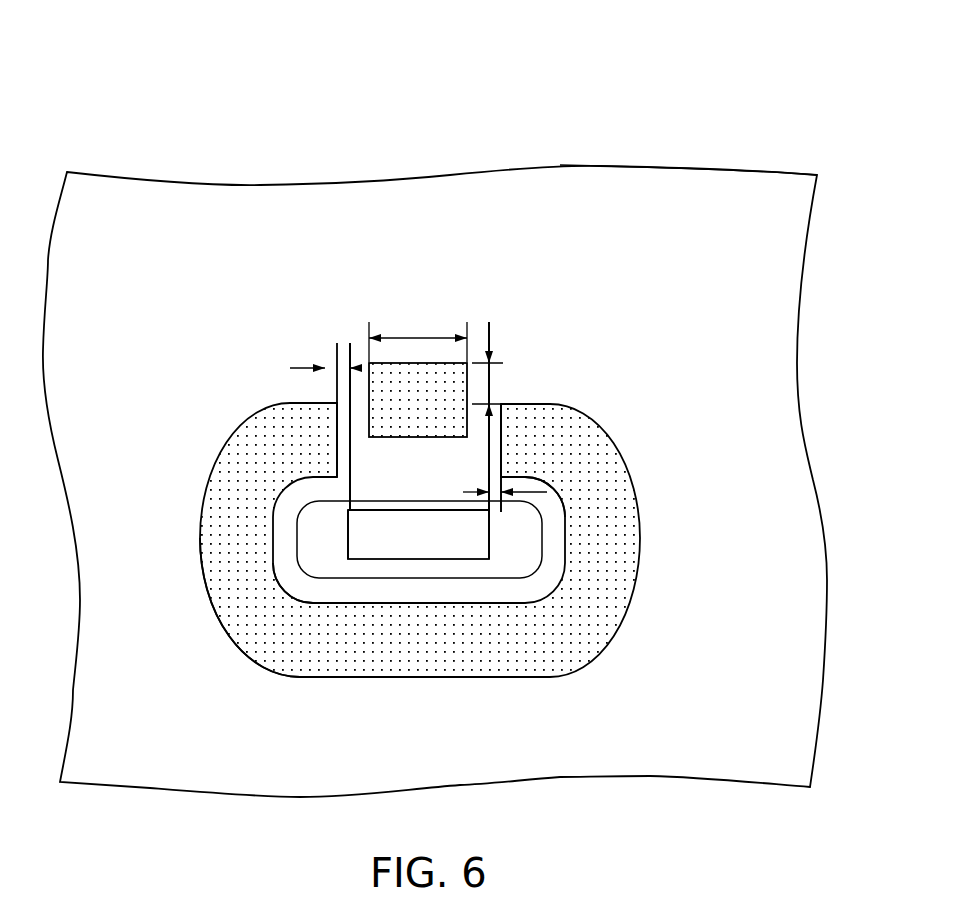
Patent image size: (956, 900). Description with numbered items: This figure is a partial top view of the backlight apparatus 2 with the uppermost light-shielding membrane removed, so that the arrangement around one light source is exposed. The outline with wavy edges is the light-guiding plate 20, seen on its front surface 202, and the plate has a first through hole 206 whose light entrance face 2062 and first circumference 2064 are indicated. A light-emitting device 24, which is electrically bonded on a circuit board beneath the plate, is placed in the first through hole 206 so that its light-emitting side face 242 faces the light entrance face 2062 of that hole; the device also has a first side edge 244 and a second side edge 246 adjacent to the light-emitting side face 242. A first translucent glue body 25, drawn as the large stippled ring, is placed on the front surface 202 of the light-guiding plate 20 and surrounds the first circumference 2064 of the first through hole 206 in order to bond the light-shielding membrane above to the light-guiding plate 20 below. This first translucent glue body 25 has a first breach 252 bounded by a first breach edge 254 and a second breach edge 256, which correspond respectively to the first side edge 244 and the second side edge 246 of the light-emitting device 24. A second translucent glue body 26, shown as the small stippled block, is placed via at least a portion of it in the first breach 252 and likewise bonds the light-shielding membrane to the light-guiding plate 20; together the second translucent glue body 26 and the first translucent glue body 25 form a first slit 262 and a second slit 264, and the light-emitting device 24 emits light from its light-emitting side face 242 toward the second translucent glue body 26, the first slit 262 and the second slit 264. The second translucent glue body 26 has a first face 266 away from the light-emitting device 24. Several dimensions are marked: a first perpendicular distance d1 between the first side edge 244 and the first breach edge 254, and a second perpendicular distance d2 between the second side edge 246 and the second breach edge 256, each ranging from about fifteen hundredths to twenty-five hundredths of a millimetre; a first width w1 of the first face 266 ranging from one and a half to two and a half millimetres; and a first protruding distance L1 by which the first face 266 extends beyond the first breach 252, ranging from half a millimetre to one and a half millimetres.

The backlight apparatus 2 is at (444, 68).
The light-guiding plate 20 is at (532, 197).
The front surface 202 is at (765, 222).
The first through hole 206 is at (518, 560).
The light entrance face 2062 is at (420, 500).
The first circumference 2064 is at (318, 590).
The light-emitting device 24 is at (415, 537).
The light-emitting side face 242 is at (443, 513).
The first side edge 244 is at (347, 530).
The second side edge 246 is at (489, 533).
The first translucent glue body 25 is at (256, 640).
The first breach 252 is at (417, 467).
The first breach edge 254 is at (337, 450).
The second breach edge 256 is at (502, 438).
The second translucent glue body 26 is at (443, 408).
The first slit 262 is at (360, 428).
The second slit 264 is at (482, 435).
The first face 266 is at (402, 362).
The first perpendicular distance d1 is at (325, 368).
The second perpendicular distance d2 is at (547, 492).
The first width w1 is at (424, 336).
The first protruding distance L1 is at (490, 340).